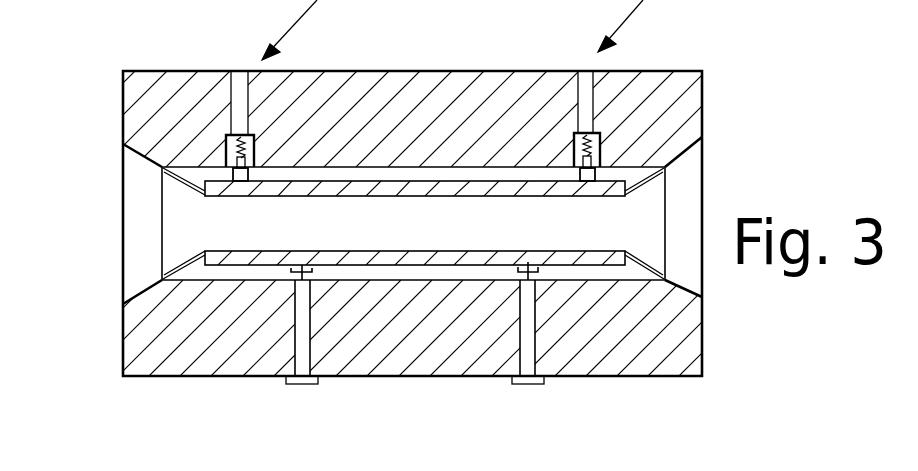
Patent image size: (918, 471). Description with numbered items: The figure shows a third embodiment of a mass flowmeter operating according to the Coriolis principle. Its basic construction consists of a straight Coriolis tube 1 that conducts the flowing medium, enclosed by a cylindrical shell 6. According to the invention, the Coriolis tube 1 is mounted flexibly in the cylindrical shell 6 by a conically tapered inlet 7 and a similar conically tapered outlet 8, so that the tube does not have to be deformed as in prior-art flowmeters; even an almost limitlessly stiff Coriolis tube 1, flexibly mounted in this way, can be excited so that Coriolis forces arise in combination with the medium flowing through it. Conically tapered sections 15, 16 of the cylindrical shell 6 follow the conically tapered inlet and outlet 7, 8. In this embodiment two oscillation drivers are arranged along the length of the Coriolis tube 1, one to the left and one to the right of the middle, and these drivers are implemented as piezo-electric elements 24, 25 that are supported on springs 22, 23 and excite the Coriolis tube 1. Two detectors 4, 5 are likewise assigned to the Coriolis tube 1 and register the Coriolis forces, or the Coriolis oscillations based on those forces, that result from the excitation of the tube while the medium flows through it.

The Coriolis tube 1 is at (407, 181).
The detector 4 is at (288, 277).
The detector 5 is at (538, 276).
The cylindrical shell 6 is at (628, 107).
The conically tapered inlet 7 is at (162, 195).
The conically tapered outlet 8 is at (668, 263).
The conically tapered section 15 is at (148, 160).
The conically tapered section 16 is at (685, 148).
The spring 22 is at (238, 135).
The spring 23 is at (587, 133).
The piezo-electric element 24 is at (250, 181).
The piezo-electric element 25 is at (583, 178).